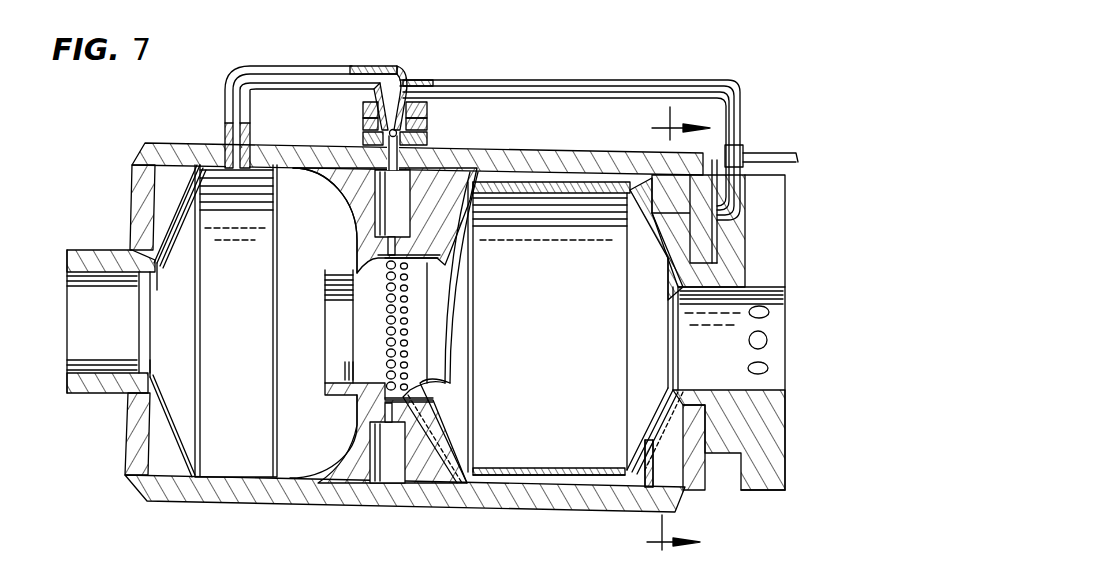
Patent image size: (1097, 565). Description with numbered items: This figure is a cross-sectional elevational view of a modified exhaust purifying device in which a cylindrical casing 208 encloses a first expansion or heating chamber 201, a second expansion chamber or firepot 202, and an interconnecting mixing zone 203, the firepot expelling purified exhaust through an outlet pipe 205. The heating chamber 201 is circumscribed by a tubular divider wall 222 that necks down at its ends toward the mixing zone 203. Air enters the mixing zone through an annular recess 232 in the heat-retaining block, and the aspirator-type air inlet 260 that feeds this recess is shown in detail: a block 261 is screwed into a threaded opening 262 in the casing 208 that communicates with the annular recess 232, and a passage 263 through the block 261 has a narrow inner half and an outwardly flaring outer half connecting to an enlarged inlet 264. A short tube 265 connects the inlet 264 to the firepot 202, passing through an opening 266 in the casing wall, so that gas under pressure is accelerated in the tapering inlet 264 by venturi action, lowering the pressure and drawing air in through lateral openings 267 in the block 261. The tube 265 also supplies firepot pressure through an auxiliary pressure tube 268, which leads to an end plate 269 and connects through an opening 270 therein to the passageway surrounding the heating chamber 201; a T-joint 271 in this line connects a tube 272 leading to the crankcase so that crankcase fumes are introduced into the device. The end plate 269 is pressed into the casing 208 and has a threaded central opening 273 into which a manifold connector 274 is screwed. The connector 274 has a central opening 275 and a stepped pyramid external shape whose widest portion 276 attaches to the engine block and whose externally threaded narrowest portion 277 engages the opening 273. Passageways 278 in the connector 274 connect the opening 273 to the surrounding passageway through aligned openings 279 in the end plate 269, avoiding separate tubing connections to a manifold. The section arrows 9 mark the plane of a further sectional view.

The heating chamber 201 is at (565, 329).
The firepot 202 is at (240, 326).
The mixing zone 203 is at (433, 329).
The outlet pipe 205 is at (88, 393).
The cylindrical casing 208 is at (512, 500).
The tubular divider wall 222 is at (533, 468).
The annular recess 232 is at (395, 478).
The pilot valve 260 is at (411, 118).
The block 261 is at (432, 115).
The threaded opening 262 is at (350, 190).
The passage 263 is at (365, 112).
The enlarged inlet 264 is at (365, 124).
The short tube 265 is at (330, 78).
The opening 266 is at (223, 147).
The lateral openings 267 is at (427, 139).
The auxiliary pressure tube 268 is at (608, 92).
The end plate 269 is at (705, 483).
The opening 270 is at (720, 152).
The T-joint 271 is at (740, 150).
The tube 272 is at (788, 162).
The threaded central opening 273 is at (665, 431).
The manifold connector 274 is at (780, 450).
The central opening 275 is at (769, 357).
The widest portion 276 is at (778, 495).
The narrowest portion 277 is at (677, 398).
The passageways 278 is at (743, 402).
The aligned openings 279 is at (660, 463).
The section line 9- 9 is at (669, 330).